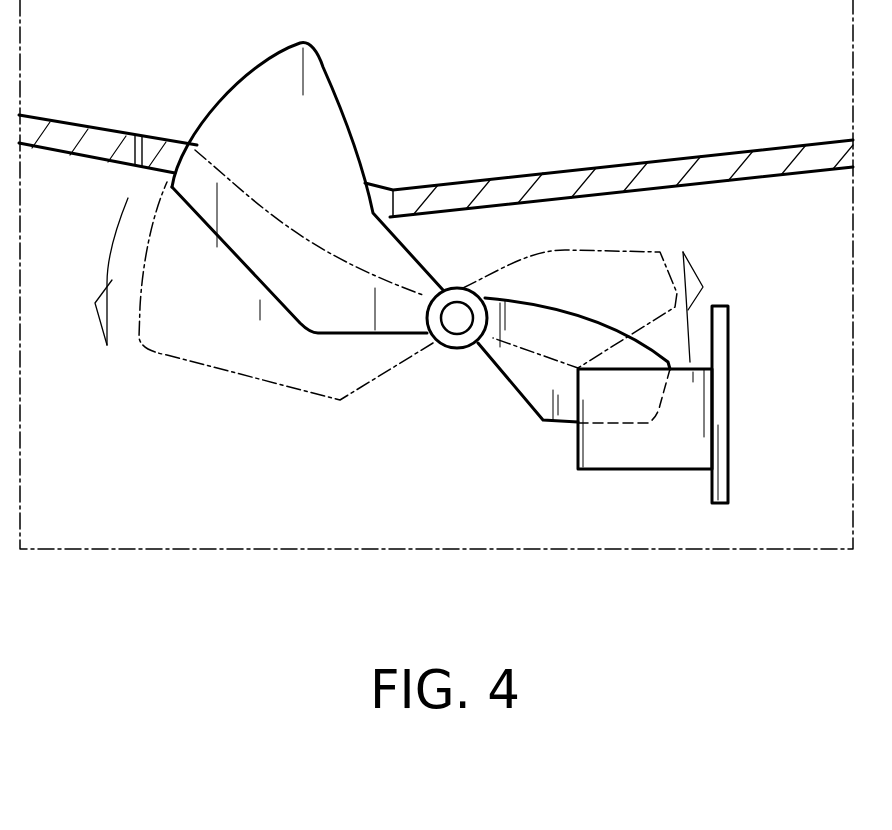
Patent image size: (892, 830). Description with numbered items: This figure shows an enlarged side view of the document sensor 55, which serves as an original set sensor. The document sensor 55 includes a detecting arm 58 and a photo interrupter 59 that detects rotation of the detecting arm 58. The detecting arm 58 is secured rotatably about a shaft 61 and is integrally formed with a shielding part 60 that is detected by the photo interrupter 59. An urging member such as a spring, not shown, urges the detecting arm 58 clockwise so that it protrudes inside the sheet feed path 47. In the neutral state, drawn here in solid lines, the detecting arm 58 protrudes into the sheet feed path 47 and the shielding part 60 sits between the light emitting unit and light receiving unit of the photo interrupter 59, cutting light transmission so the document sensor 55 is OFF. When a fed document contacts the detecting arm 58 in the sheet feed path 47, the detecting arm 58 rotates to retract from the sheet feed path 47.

The sheet feed path 47 is at (628, 162).
The document sensor 55 is at (283, 415).
The detecting arm 58 is at (323, 72).
The photo interrupter 59 is at (650, 470).
The shielding part 60 is at (545, 423).
The shaft 61 is at (457, 334).